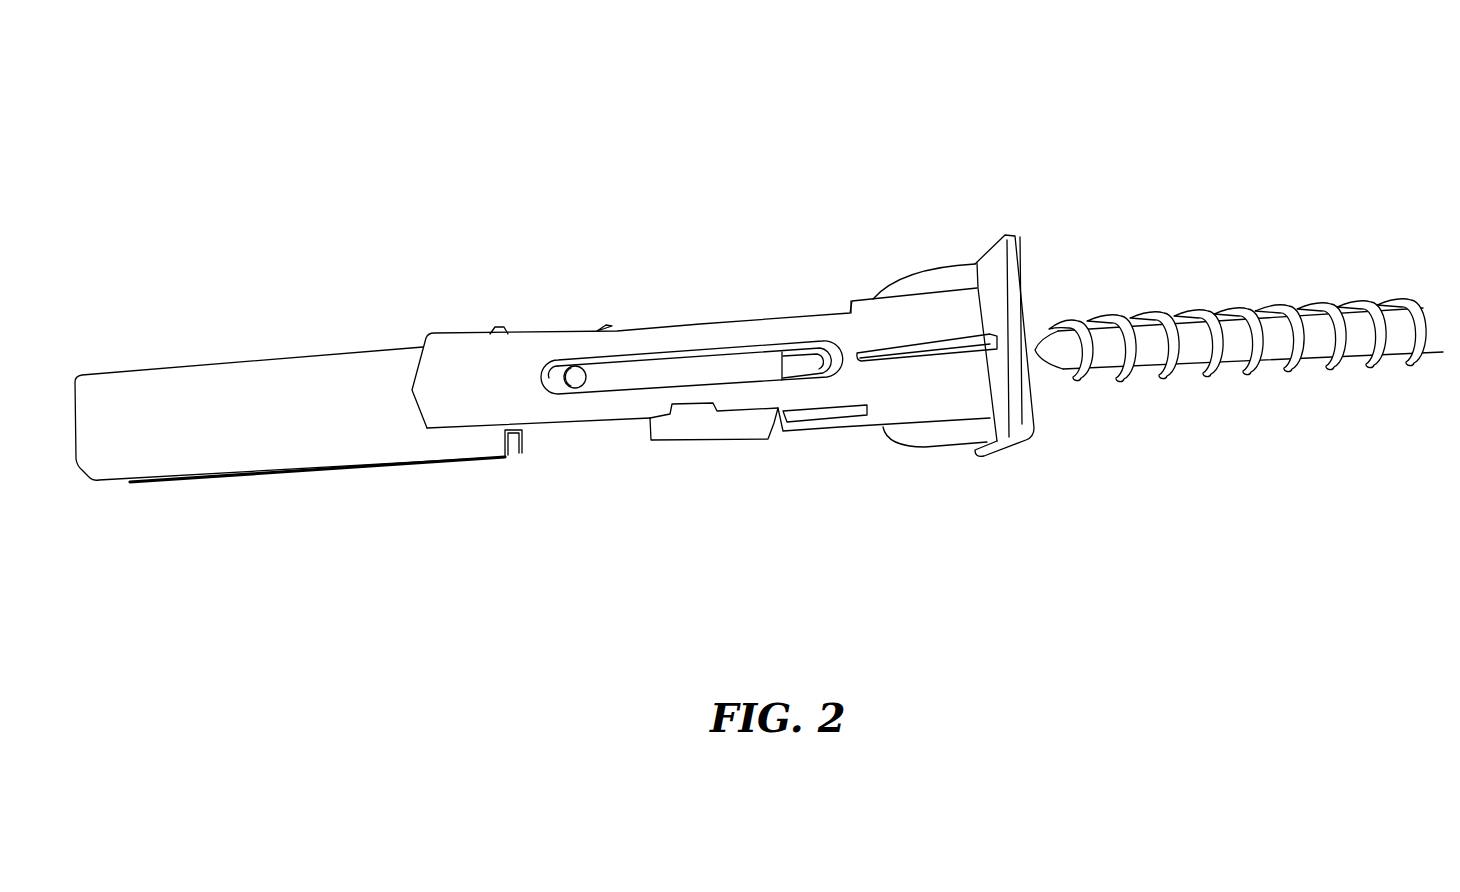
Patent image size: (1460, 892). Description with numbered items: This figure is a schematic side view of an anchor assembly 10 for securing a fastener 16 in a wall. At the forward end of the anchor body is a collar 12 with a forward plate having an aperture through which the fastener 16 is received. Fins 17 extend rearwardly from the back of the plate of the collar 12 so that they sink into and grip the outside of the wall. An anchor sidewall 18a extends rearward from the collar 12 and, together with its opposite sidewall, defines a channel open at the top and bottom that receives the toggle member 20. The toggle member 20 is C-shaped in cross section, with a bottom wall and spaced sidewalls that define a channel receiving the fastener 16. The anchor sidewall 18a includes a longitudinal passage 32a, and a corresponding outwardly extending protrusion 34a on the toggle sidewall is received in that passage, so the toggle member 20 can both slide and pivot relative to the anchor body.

The anchor assembly 10 is at (338, 192).
The collar 12 is at (1007, 235).
The fastener 16 is at (1223, 333).
The fins 17 is at (912, 340).
The anchor sidewall 18a is at (458, 410).
The toggle member 20 is at (265, 453).
The longitudinal passage 32a is at (812, 352).
The protrusion 34a is at (573, 373).